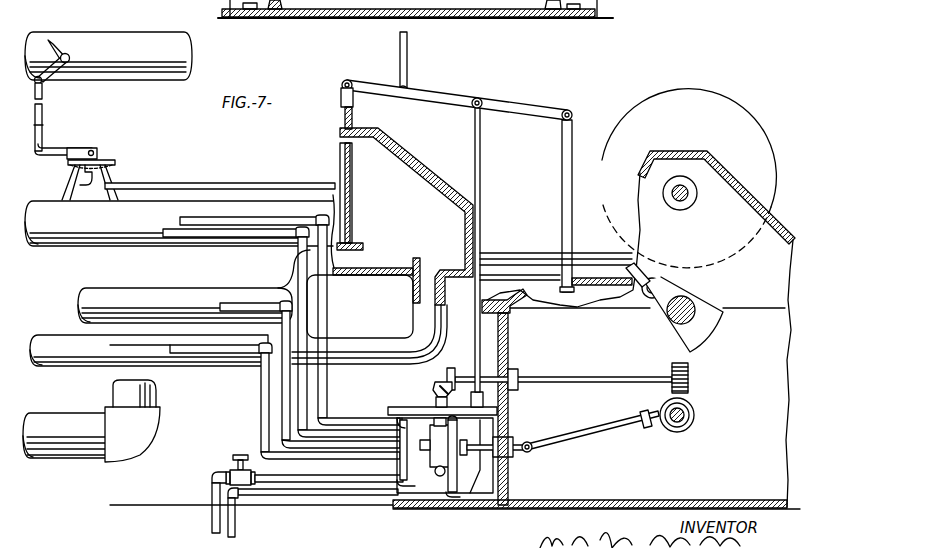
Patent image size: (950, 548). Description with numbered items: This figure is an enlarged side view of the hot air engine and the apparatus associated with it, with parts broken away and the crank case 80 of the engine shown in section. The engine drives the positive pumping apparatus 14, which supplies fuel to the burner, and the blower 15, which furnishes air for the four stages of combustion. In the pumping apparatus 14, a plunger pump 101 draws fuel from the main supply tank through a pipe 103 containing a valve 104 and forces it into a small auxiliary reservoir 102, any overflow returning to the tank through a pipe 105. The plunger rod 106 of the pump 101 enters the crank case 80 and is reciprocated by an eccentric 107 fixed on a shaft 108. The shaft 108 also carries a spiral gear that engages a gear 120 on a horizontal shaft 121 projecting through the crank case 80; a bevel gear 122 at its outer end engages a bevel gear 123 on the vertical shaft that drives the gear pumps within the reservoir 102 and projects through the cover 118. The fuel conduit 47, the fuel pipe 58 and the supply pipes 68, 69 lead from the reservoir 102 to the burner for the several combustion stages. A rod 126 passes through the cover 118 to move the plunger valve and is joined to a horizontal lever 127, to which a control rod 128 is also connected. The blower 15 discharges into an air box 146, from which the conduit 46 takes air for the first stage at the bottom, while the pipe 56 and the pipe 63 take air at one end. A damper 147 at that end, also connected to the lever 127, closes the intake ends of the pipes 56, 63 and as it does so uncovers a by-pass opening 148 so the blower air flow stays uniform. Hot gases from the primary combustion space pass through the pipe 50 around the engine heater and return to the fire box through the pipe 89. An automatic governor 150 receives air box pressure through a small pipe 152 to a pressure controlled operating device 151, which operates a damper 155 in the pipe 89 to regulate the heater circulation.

The positive pumping apparatus 14 is at (505, 463).
The blower 15 is at (688, 108).
The conduit 46 is at (355, 338).
The conduit 47 is at (205, 347).
The pipe 50 is at (77, 454).
The conduit 56 is at (143, 296).
The pipe 58 is at (222, 303).
The pipe 63 is at (179, 223).
The supply pipe 68 is at (236, 237).
The supply pipe 69 is at (254, 219).
The crank case 80 is at (510, 349).
The pipe 89 is at (163, 36).
The plunger pump 101 is at (438, 452).
The auxiliary reservoir 102 is at (505, 433).
The pipe 103 is at (292, 478).
The valve 104 is at (245, 444).
The pipe 105 is at (364, 494).
The plunger rod 106 is at (585, 441).
The eccentric 107 is at (677, 427).
The shaft 108 is at (695, 414).
The cover 118 is at (497, 406).
The gear 120 is at (690, 378).
The horizontal shaft 121 is at (605, 377).
The bevel gear 122 is at (451, 370).
The bevel gear 123 is at (433, 386).
The rod 126 is at (481, 235).
The horizontal lever 127 is at (519, 103).
The control rod 128 is at (408, 65).
The air box 146 is at (415, 161).
The damper 147 is at (356, 231).
The by-pass opening 148 is at (341, 165).
The automatic governor 150 is at (44, 127).
The pressure controlled operating device 151 is at (108, 162).
The small pipe 152 is at (222, 185).
The hanger arm 155 is at (65, 56).